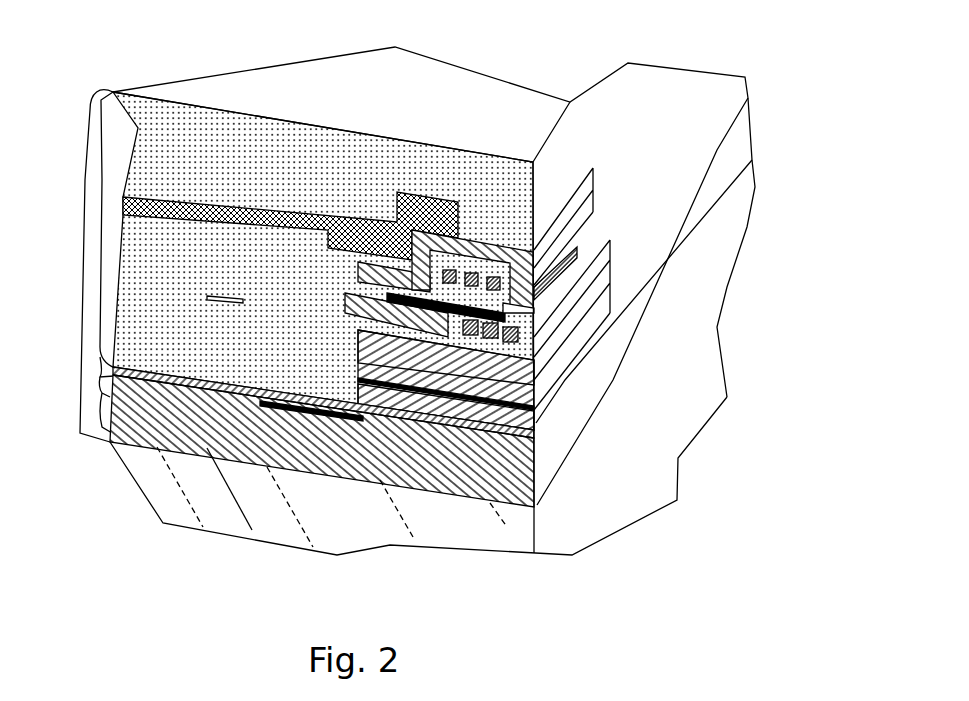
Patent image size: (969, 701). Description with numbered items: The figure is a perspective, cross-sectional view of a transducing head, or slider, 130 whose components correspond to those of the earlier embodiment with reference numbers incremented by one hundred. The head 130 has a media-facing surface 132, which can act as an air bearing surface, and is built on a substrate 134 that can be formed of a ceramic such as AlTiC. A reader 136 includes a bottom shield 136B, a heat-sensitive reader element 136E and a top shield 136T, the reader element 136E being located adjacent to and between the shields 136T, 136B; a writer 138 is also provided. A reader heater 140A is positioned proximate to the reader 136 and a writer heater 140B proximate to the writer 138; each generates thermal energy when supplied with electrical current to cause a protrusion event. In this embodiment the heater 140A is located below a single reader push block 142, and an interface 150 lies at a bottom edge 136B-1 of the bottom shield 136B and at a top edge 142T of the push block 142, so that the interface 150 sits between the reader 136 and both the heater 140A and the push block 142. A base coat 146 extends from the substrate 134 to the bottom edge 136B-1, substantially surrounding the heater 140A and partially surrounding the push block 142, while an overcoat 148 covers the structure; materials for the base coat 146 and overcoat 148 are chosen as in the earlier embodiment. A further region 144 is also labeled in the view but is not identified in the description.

The transducing head 130 is at (543, 72).
The media-facing surface 132 is at (701, 306).
The substrate 134 is at (232, 503).
The reader 136 is at (580, 429).
The top shield 136T is at (555, 338).
The bottom shield 136B is at (480, 482).
The bottom edge of the bottom shield 136B-1 is at (495, 490).
The reader element 136E is at (538, 392).
The writer 138 is at (557, 283).
The reader heater 140A is at (335, 420).
The writer heater 140B is at (242, 300).
The push block 142 is at (296, 481).
The top edge of the push block 142T is at (200, 380).
The encapsulant 144 is at (84, 262).
The base coat 146 is at (110, 398).
The overcoat 148 is at (104, 232).
The interface 150 is at (437, 470).